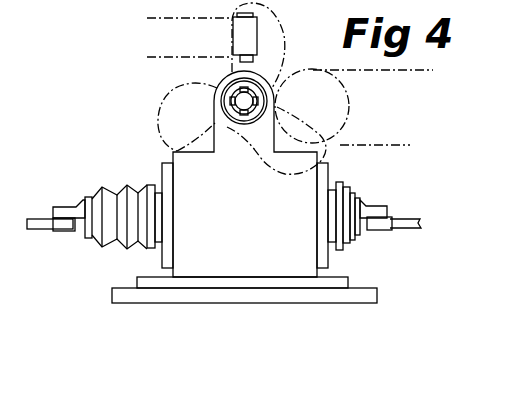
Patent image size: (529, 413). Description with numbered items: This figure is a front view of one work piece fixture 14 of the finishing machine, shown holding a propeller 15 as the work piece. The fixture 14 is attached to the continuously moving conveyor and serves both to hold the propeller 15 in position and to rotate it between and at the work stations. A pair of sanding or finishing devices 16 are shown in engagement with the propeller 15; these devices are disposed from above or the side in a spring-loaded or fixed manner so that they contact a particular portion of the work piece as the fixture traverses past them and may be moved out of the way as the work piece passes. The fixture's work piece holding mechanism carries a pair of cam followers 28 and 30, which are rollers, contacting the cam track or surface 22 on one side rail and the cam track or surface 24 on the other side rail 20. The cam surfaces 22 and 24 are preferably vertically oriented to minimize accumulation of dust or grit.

The work piece fixture 14 is at (273, 298).
The propeller 15 is at (274, 25).
The sanding or finishing machine 16 is at (185, 47).
The side rail 20 is at (37, 1).
The cam track or surface 22 is at (40, 230).
The cam track or surface 24 is at (405, 229).
The cam follower 28 is at (63, 232).
The cam follower 30 is at (378, 231).